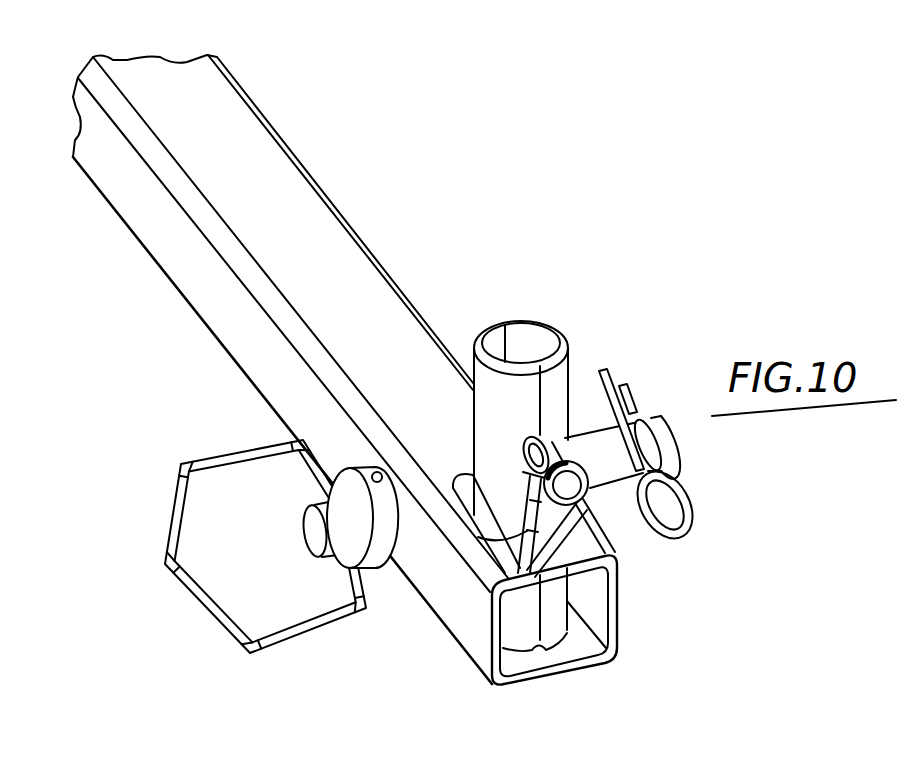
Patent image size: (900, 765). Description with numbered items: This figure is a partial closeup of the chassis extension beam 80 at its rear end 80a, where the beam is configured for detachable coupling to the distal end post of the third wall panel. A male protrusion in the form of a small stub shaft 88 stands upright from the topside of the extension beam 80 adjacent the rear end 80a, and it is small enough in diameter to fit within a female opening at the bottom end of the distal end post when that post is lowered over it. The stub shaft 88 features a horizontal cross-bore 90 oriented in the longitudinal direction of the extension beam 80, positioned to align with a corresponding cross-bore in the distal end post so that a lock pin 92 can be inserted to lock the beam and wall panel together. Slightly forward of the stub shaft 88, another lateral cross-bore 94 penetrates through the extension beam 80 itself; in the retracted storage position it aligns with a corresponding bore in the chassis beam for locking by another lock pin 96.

The extension beam 80 is at (307, 243).
The rear end 80a is at (586, 633).
The stub shaft 88 is at (557, 382).
The horizontal cross-bore 90 is at (523, 458).
The lock pin 92 is at (578, 488).
The lateral cross-bore 94 is at (373, 473).
The lock pin 96 is at (310, 533).